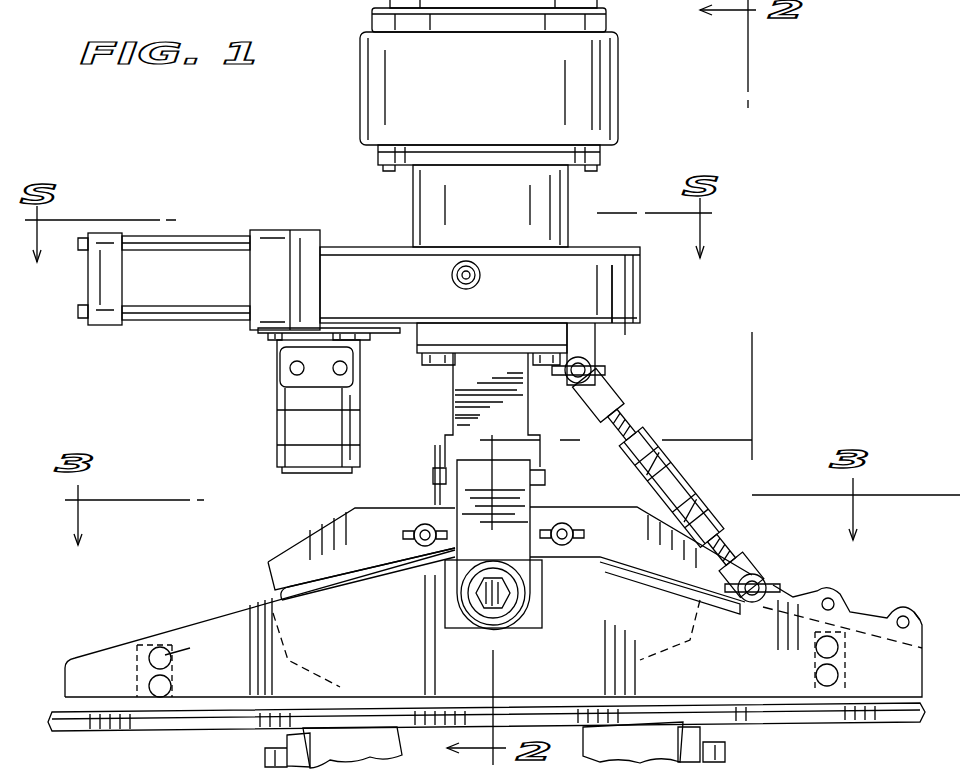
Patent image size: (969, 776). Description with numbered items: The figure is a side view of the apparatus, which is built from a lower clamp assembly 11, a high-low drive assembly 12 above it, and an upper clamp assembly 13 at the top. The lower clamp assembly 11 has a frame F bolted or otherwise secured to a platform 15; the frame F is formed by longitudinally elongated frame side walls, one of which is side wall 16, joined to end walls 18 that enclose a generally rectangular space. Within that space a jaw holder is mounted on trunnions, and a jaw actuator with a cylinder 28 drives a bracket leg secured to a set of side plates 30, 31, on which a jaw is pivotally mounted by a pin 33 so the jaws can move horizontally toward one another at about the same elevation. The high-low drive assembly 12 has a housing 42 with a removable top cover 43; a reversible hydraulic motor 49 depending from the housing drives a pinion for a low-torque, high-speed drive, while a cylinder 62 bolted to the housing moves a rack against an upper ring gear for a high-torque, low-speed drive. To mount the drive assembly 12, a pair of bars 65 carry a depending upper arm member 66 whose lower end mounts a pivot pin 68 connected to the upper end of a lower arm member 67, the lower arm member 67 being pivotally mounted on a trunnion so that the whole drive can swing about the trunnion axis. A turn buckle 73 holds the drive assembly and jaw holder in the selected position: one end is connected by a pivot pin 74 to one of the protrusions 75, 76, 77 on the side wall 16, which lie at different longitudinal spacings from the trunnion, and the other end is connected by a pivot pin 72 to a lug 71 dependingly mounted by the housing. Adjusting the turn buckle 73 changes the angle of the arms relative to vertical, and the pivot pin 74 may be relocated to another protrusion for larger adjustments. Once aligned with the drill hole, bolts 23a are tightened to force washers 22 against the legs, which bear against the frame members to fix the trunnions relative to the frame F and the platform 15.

The lower clamp assembly 11 is at (493, 617).
The high-low drive assembly 12 is at (515, 285).
The upper clamp assembly 13 is at (628, 70).
The platform 15 is at (790, 712).
The frame side wall 16 is at (248, 688).
The end walls 18 is at (135, 672).
The washers 22 is at (510, 605).
The bolts 23a is at (482, 595).
The cylinder 28 is at (495, 745).
The side plate 30 is at (674, 580).
The side plate 31 is at (303, 545).
The pin 33 is at (574, 542).
The housing 42 is at (635, 308).
The removable top cover 43 is at (405, 262).
The hydraulic motor 49 is at (287, 424).
The cylinder 62 is at (182, 290).
The bars 65 is at (493, 340).
The upper arm member 66 is at (460, 380).
The lower arm member 67 is at (518, 500).
The pivot pin 68 is at (432, 478).
The lug 71 is at (582, 338).
The pivot pin 72 is at (600, 384).
The turn buckle 73 is at (686, 472).
The pivot pin 74 is at (757, 574).
The protrusion 75 is at (843, 592).
The protrusion 76 is at (766, 582).
The protrusion 77 is at (912, 612).
The frame F is at (190, 638).